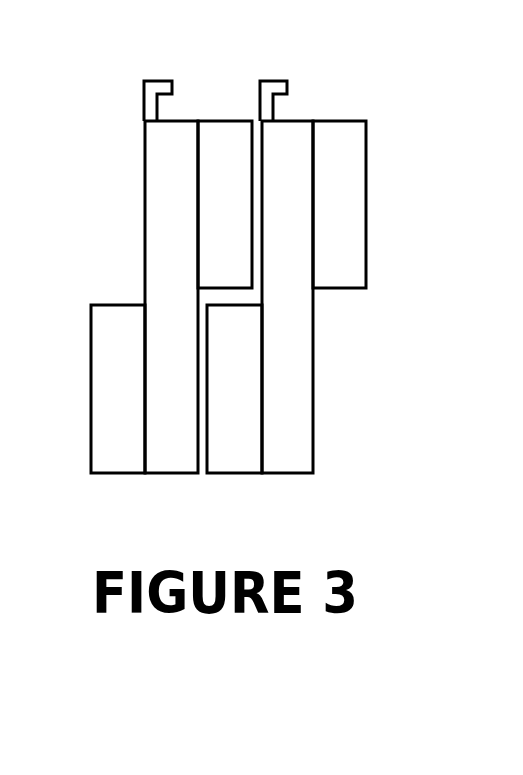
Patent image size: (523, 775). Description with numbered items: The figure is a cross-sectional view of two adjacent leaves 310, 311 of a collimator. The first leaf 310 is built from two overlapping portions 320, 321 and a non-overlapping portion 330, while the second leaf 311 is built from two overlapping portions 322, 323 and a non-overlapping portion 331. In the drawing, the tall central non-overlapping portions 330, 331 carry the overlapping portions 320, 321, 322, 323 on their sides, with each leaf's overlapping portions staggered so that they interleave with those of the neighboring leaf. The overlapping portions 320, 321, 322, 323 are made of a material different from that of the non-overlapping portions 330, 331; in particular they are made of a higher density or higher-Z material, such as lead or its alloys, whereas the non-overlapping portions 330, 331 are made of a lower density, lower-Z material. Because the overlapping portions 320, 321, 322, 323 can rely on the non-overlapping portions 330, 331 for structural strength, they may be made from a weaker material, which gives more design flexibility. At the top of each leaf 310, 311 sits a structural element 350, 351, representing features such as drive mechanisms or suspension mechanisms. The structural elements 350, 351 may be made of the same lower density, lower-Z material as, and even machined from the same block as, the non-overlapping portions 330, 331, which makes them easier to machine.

The leaf 310 is at (143, 228).
The leaf 311 is at (318, 362).
The overlapping portion 320 is at (138, 400).
The overlapping portion 321 is at (243, 214).
The overlapping portion 322 is at (253, 400).
The overlapping portion 323 is at (358, 214).
The non-overlapping portion 330 is at (190, 306).
The non-overlapping portion 331 is at (305, 306).
The structural element 350 is at (142, 75).
The structural element 351 is at (285, 73).